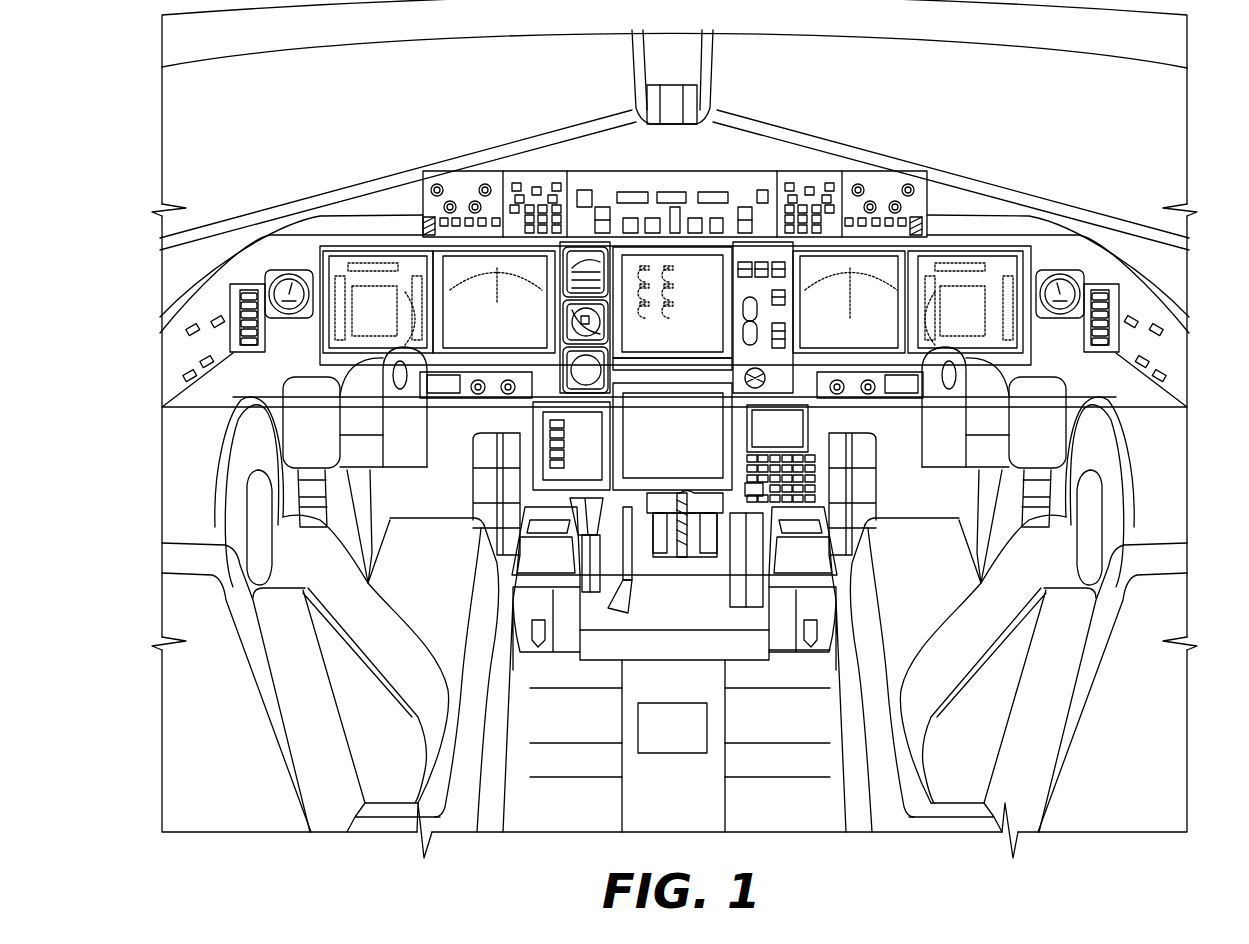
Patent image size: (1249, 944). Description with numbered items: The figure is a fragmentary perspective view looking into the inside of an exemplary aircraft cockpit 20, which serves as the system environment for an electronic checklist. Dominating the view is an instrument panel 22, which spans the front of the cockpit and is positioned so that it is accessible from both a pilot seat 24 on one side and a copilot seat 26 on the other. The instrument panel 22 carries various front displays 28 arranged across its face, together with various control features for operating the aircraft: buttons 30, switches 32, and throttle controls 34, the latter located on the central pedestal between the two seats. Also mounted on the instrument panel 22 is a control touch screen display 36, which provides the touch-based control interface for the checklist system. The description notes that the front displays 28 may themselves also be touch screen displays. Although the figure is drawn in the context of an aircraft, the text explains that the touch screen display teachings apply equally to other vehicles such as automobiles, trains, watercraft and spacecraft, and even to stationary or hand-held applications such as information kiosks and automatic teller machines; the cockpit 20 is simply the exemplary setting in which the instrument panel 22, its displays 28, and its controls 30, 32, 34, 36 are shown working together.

The aircraft cockpit 20 is at (1146, 143).
The instrument panel 22 is at (327, 222).
The pilot seat 24 is at (190, 482).
The copilot seat 26 is at (1153, 487).
The front displays 28 is at (386, 321).
The buttons 30 is at (810, 185).
The switches 32 is at (740, 273).
The throttle controls 34 is at (708, 495).
The control touch screen display 36 is at (590, 440).